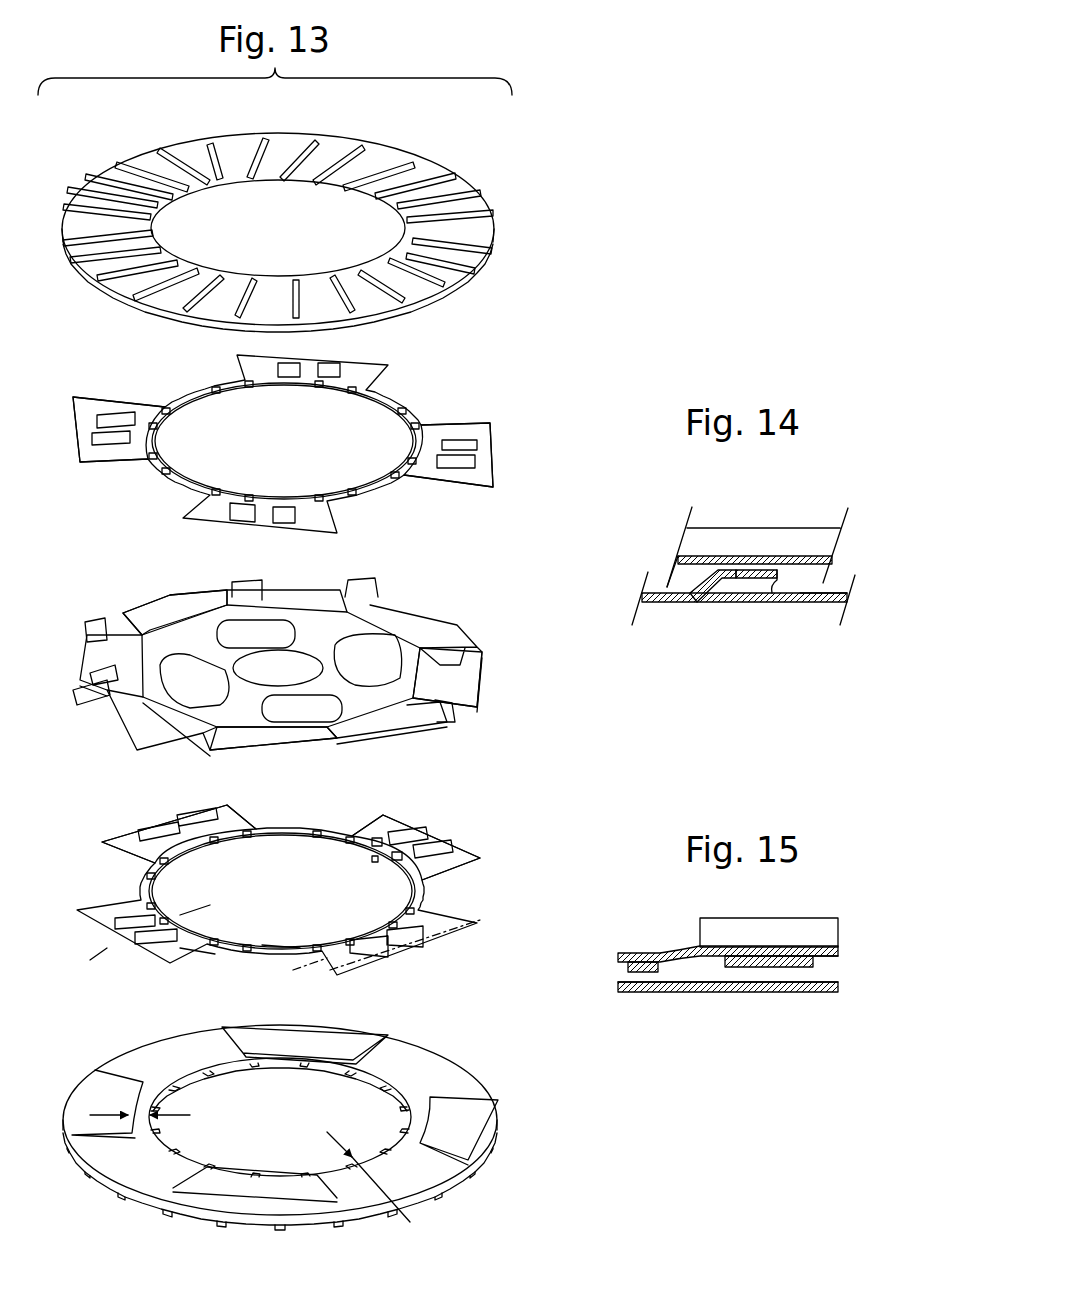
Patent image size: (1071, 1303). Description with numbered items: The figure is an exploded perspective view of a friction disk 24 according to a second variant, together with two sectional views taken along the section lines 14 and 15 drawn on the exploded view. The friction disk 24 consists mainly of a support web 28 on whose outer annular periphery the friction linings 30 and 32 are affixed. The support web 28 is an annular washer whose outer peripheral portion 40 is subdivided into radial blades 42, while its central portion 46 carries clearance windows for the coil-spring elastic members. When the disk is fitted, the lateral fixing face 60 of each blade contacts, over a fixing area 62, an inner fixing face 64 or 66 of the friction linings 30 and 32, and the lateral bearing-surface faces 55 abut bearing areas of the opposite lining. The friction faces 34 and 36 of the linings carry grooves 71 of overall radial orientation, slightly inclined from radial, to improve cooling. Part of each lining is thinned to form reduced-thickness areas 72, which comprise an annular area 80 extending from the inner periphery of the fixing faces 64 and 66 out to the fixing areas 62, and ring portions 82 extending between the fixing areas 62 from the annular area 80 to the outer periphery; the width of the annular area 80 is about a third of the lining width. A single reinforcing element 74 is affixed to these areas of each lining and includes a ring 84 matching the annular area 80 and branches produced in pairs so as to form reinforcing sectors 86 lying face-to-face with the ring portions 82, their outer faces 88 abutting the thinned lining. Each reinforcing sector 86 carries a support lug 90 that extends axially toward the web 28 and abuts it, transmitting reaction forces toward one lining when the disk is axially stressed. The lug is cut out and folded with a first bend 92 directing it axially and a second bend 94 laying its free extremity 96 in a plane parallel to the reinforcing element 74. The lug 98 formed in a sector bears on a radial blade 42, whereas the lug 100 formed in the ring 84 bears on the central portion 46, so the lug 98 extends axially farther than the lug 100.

In FIG. 13, the section line 14— 14 is at (473, 923).
In FIG. 13, the section line 15— 15 is at (200, 912).
In FIG. 13, the friction disk 24 is at (487, 382).
In FIG. 13, the support web 28 is at (309, 912).
In FIG. 14, the support web 28 is at (742, 563).
In FIG. 15, the support web 28 is at (713, 976).
In FIG. 13, the friction lining 30 is at (303, 220).
In FIG. 14, the friction lining 30 is at (755, 532).
In FIG. 15, the friction lining 30 is at (755, 921).
In FIG. 13, the friction lining 32 is at (203, 1217).
In FIG. 13, the friction face 34 is at (382, 153).
In FIG. 13, the friction face 36 is at (289, 1137).
In FIG. 13, the outer peripheral portion 40 is at (113, 610).
In FIG. 13, the radial blade 42 is at (483, 677).
In FIG. 15, the radial blade 42 is at (830, 955).
In FIG. 15, the central portion 46 is at (640, 952).
In FIG. 13, the lateral bearing-surface face 55 is at (372, 585).
In FIG. 13, the lateral fixing face 60 is at (123, 700).
In FIG. 15, the lateral fixing face 60 is at (798, 950).
In FIG. 13, the fixing area 62 is at (467, 1120).
In FIG. 13, the inner fixing face 64 is at (112, 287).
In FIG. 13, the inner fixing face 66 is at (73, 1080).
In FIG. 14, the inner fixing face 66 is at (665, 570).
In FIG. 13, the groove 71 is at (160, 157).
In FIG. 13, the reduced-thickness area 72 is at (188, 1042).
In FIG. 13, the reinforcing element 74 is at (150, 383).
In FIG. 14, the reinforcing element 74 is at (743, 619).
In FIG. 13, the annular area 80 is at (295, 1060).
In FIG. 13, the ring portion 82 is at (437, 1168).
In FIG. 13, the ring 84 is at (227, 937).
In FIG. 15, the ring 84 is at (620, 985).
In FIG. 13, the reinforcing sector 86 is at (490, 472).
In FIG. 14, the reinforcing sector 86 is at (830, 605).
In FIG. 15, the reinforcing sector 86 is at (825, 993).
In FIG. 13, the outer face 88 is at (455, 430).
In FIG. 13, the support lug 90 is at (285, 888).
In FIG. 13, the first bend 92 is at (397, 860).
In FIG. 14, the first bend 92 is at (697, 602).
In FIG. 13, the second bend 94 is at (378, 842).
In FIG. 14, the second bend 94 is at (732, 580).
In FIG. 13, the free extremity 96 is at (390, 842).
In FIG. 14, the free extremity 96 is at (772, 585).
In FIG. 15, the free extremity 96 is at (660, 972).
In FIG. 13, the support lug 98 is at (440, 842).
In FIG. 15, the support lug 98 is at (790, 1003).
In FIG. 13, the support lug 100 is at (370, 858).
In FIG. 15, the support lug 100 is at (635, 1003).